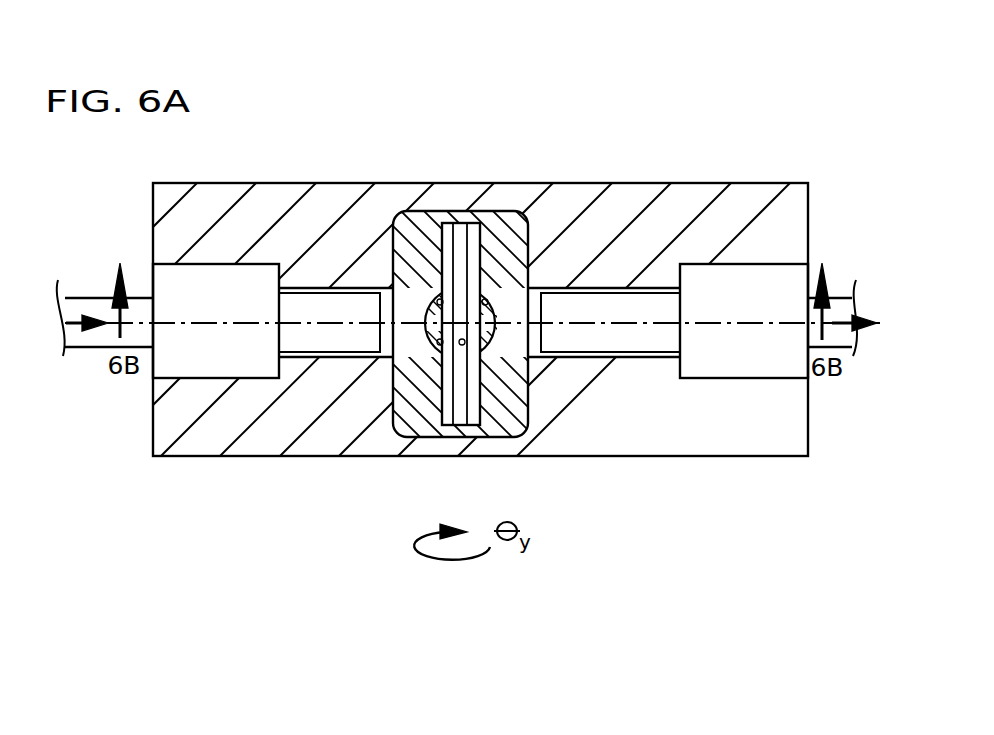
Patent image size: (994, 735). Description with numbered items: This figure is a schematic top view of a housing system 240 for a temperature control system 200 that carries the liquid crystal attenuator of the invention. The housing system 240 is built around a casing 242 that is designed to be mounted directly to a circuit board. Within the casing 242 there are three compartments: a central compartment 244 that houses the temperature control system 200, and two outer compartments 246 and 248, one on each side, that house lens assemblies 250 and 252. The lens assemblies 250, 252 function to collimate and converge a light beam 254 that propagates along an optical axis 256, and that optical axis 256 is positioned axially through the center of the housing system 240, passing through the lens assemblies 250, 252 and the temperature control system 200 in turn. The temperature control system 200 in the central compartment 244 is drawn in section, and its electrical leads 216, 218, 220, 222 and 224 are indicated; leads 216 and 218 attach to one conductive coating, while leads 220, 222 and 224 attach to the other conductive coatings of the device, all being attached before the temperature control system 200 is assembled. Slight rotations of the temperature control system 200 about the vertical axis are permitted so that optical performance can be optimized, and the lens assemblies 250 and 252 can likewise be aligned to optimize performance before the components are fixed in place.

The temperature control system 200 is at (481, 243).
The electrical lead 216 is at (439, 345).
The electrical lead 218 is at (438, 299).
The electrical lead 220 is at (460, 309).
The electrical lead 222 is at (463, 345).
The electrical lead 224 is at (487, 299).
The housing system 240 is at (783, 115).
The casing 242 is at (803, 182).
The compartment 244 is at (530, 221).
The compartment 246 is at (220, 264).
The compartment 248 is at (737, 264).
The lens assembly 250 is at (240, 362).
The lens assembly 252 is at (708, 355).
The light beam 254 is at (73, 322).
The optical axis 256 is at (190, 322).